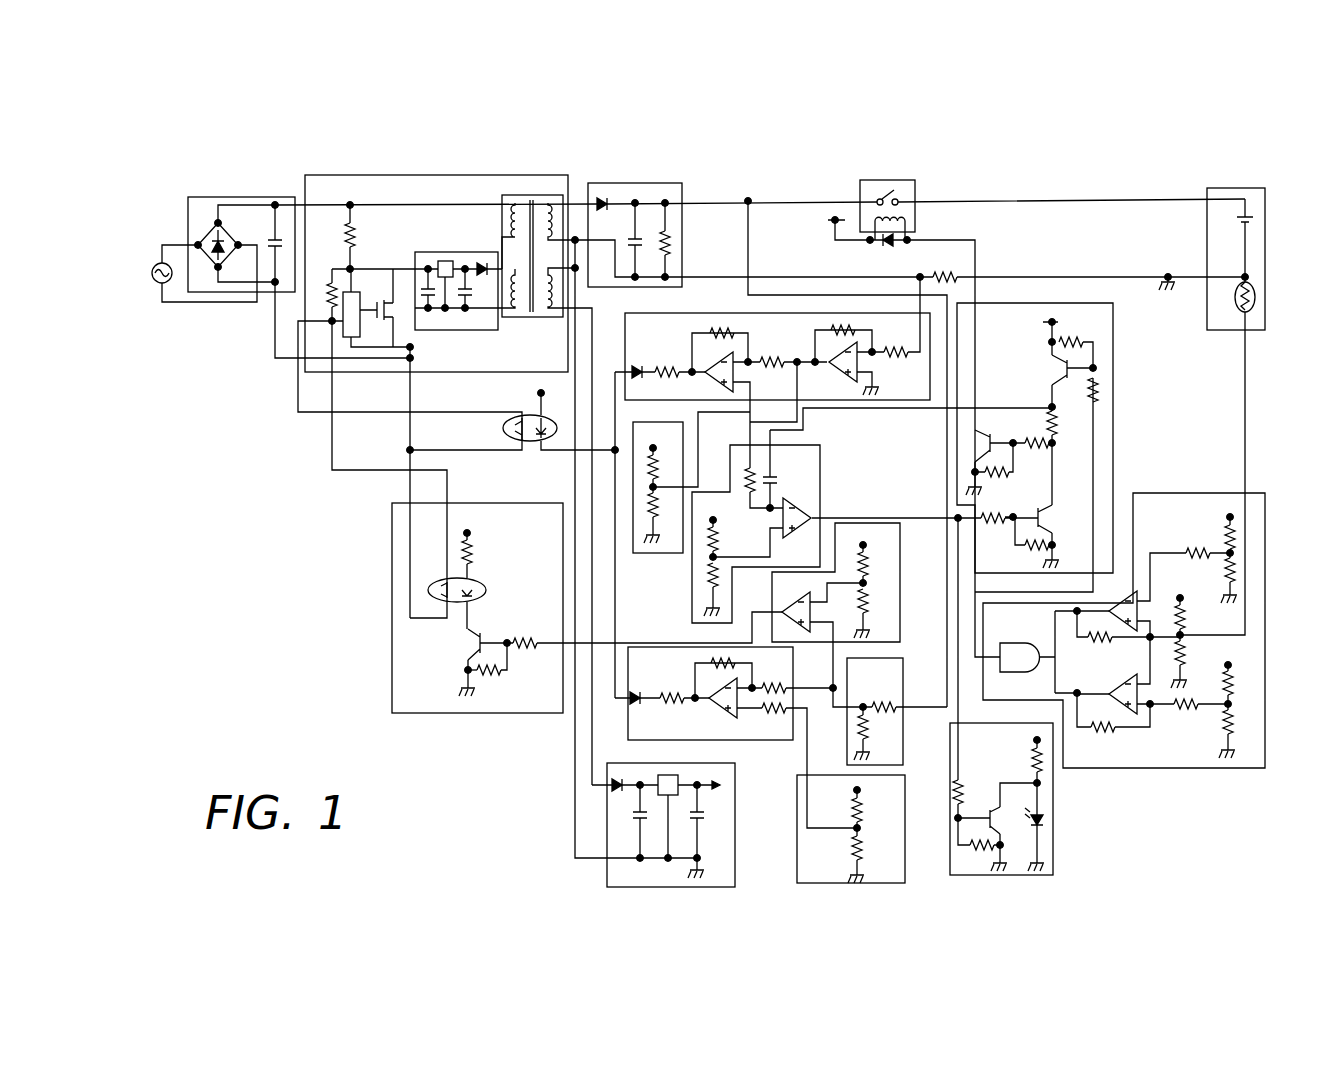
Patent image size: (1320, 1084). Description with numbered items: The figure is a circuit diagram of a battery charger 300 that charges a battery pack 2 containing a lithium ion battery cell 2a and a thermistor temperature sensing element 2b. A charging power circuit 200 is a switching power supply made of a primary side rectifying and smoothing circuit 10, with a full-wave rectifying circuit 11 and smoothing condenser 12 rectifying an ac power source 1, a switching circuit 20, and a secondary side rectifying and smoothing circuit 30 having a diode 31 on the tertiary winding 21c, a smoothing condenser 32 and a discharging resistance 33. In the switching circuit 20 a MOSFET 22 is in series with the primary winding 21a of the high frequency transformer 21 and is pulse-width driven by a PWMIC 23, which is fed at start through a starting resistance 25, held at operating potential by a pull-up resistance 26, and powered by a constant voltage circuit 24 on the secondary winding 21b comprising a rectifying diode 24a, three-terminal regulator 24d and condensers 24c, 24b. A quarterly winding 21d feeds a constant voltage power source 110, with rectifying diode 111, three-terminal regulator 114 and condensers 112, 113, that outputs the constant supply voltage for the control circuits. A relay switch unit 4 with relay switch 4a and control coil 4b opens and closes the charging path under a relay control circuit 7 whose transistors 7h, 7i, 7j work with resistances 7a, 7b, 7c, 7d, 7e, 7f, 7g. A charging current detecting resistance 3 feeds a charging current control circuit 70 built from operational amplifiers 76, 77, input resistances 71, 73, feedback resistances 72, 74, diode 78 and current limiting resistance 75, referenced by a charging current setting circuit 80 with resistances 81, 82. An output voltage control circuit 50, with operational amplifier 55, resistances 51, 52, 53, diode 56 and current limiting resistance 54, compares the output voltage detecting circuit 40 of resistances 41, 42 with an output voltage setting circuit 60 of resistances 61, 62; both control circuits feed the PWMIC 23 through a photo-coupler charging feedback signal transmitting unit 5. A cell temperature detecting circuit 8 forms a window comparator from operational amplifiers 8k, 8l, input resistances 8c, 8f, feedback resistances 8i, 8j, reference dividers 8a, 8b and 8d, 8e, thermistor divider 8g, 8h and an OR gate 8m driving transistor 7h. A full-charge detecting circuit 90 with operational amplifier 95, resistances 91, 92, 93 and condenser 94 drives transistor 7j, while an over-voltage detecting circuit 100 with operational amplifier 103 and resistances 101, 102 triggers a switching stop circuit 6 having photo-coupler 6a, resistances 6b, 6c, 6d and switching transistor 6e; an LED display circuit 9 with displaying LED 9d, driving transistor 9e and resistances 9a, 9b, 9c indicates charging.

The battery charger 300 is at (186, 176).
The ac power source 1 is at (154, 265).
The primary side rectifying and smoothing circuit 10 is at (241, 227).
The full-wave rectifying circuit 11 is at (202, 238).
The smoothing condenser 12 is at (272, 241).
The charging power circuit 200 is at (601, 468).
The switching circuit 20 is at (437, 468).
The high frequency transformer 21 is at (524, 468).
The primary winding 21a is at (514, 203).
The secondary winding 21b is at (516, 308).
The tertiary winding 21c is at (549, 203).
The quarterly winding 21d is at (549, 309).
The MOSFET 22 is at (379, 300).
The PWMIC 23 is at (345, 291).
The constant voltage circuit 24 is at (446, 288).
The rectifying diode 24a is at (484, 263).
The condenser 24b is at (431, 298).
The condenser 24c is at (470, 298).
The three-terminal regulator 24d is at (445, 261).
The starting resistance 25 is at (346, 239).
The pull-up resistance 26 is at (332, 295).
The secondary side rectifying and smoothing circuit 30 is at (747, 223).
The diode 31 is at (603, 211).
The smoothing condenser 32 is at (643, 245).
The discharging resistance 33 is at (672, 243).
The charging current detecting resistance 3 is at (944, 271).
The switch unit 4 is at (852, 216).
The relay switch 4a is at (886, 198).
The control coil 4b is at (882, 243).
The battery pack 2 is at (1219, 399).
The battery cell 2a is at (1237, 220).
The temperature sensing element 2b is at (1235, 302).
The charging feedback signal transmitting unit 5 is at (503, 428).
The switching stop circuit 6 is at (460, 608).
The photo-coupler 6a is at (488, 589).
The resistance 6b is at (472, 552).
The resistance 6c is at (526, 639).
The resistance 6d is at (494, 676).
The switching transistor 6e is at (476, 645).
The relay control circuit 7 is at (1040, 409).
The resistance 7a is at (1078, 339).
The resistance 7b is at (1098, 390).
The resistance 7c is at (1060, 422).
The resistance 7d is at (1036, 449).
The resistance 7e is at (1000, 477).
The resistance 7f is at (993, 523).
The resistance 7g is at (1049, 548).
The transistor 7h is at (1058, 368).
The output transistor 7i is at (985, 440).
The transistor 7j is at (1046, 512).
The cell temperature detecting circuit 8 is at (1137, 610).
The voltage dividing resistance 8a is at (1228, 535).
The voltage dividing resistance 8b is at (1236, 570).
The input resistance 8c is at (1186, 555).
The voltage dividing resistance 8d is at (1225, 684).
The voltage dividing resistance 8e is at (1225, 725).
The input resistance 8f is at (1186, 710).
The resistance 8g is at (1186, 617).
The resistance 8h is at (1186, 650).
The feedback resistance 8i is at (1100, 643).
The feedback resistance 8j is at (1105, 733).
The operational amplifier 8k is at (1118, 620).
The operational amplifier 8l is at (1118, 700).
The OR gate 8m is at (1020, 643).
The LED display circuit 9 is at (1001, 793).
The resistance 9a is at (1032, 762).
The resistance 9b is at (963, 793).
The resistance 9c is at (982, 850).
The displaying LED 9d is at (1033, 830).
The driving transistor 9e is at (995, 820).
The output voltage detecting circuit 40 is at (890, 711).
The resistance 41 is at (883, 701).
The resistance 42 is at (870, 729).
The output voltage control circuit 50 is at (736, 720).
The input resistance 51 is at (772, 683).
The input resistance 52 is at (770, 714).
The feedback resistance 53 is at (718, 658).
The current limiting resistance 54 is at (669, 692).
The operational amplifier 55 is at (722, 711).
The diode 56 is at (638, 705).
The output voltage setting circuit 60 is at (870, 829).
The voltage dividing resistance 61 is at (868, 814).
The voltage dividing resistance 62 is at (868, 850).
The charging current control circuit 70 is at (761, 359).
The input resistance 71 is at (896, 347).
The feedback resistance 72 is at (841, 325).
The input resistance 73 is at (773, 357).
The feedback resistance 74 is at (722, 328).
The current limiting resistance 75 is at (668, 367).
The operational amplifier 76 is at (835, 370).
The operational amplifier 77 is at (708, 382).
The diode 78 is at (637, 366).
The charging current setting circuit 80 is at (690, 501).
The voltage dividing resistance 81 is at (661, 466).
The voltage dividing resistance 82 is at (651, 515).
The full-charge detecting circuit 90 is at (857, 515).
The resistance 91 is at (756, 470).
The voltage dividing resistance 92 is at (708, 546).
The voltage dividing resistance 93 is at (708, 580).
The condenser 94 is at (777, 480).
The operational amplifier 95 is at (813, 512).
The over-voltage detecting circuit 100 is at (737, 581).
The voltage dividing resistance 101 is at (871, 561).
The voltage dividing resistance 102 is at (871, 600).
The operational amplifier 103 is at (782, 600).
The constant voltage power source 110 is at (690, 842).
The rectifying diode 111 is at (620, 792).
The condenser 112 is at (648, 825).
The condenser 113 is at (706, 822).
The three-terminal regulator 114 is at (668, 797).